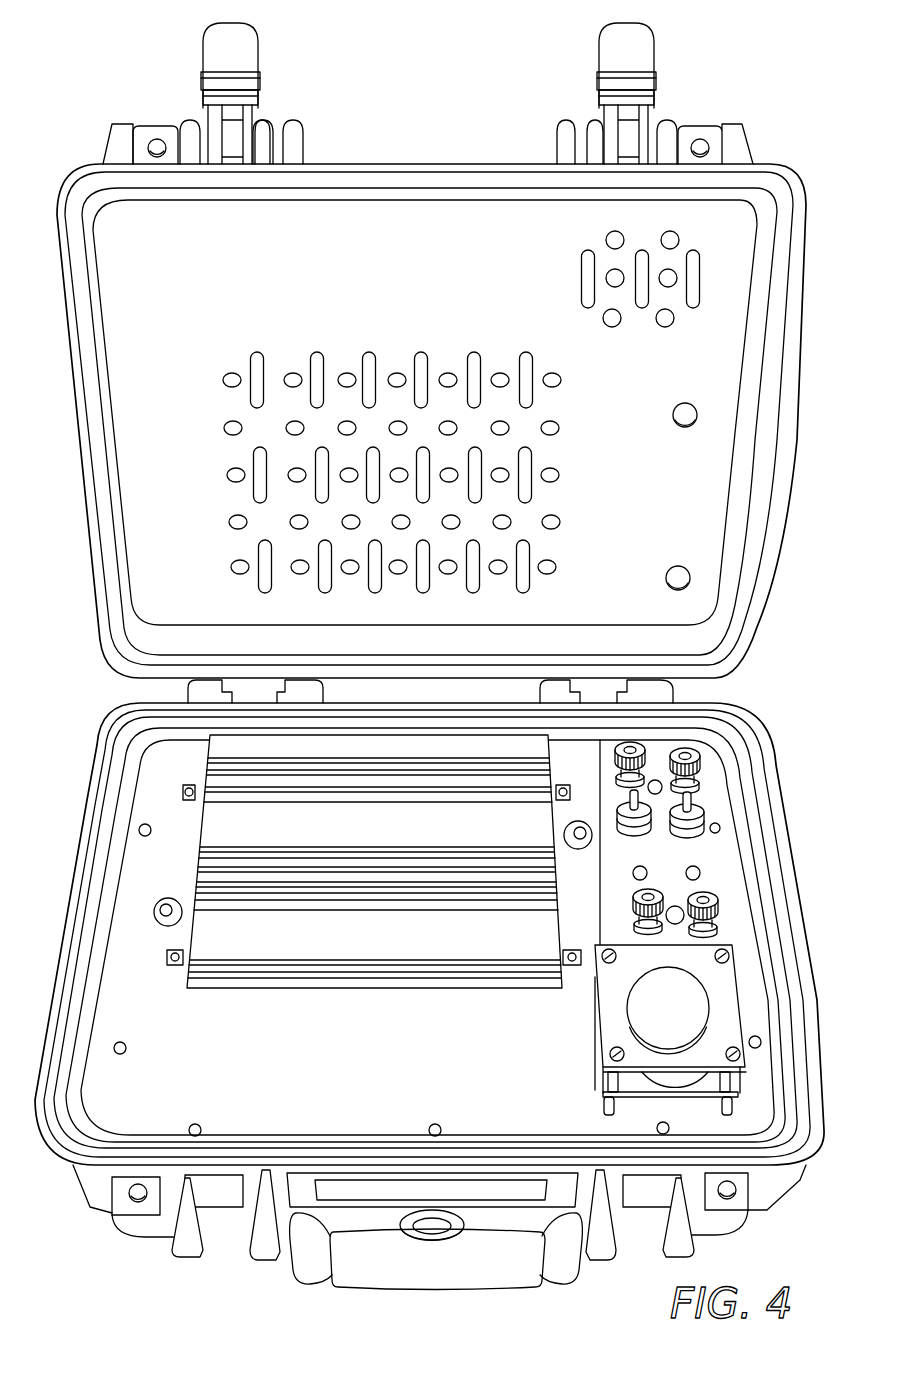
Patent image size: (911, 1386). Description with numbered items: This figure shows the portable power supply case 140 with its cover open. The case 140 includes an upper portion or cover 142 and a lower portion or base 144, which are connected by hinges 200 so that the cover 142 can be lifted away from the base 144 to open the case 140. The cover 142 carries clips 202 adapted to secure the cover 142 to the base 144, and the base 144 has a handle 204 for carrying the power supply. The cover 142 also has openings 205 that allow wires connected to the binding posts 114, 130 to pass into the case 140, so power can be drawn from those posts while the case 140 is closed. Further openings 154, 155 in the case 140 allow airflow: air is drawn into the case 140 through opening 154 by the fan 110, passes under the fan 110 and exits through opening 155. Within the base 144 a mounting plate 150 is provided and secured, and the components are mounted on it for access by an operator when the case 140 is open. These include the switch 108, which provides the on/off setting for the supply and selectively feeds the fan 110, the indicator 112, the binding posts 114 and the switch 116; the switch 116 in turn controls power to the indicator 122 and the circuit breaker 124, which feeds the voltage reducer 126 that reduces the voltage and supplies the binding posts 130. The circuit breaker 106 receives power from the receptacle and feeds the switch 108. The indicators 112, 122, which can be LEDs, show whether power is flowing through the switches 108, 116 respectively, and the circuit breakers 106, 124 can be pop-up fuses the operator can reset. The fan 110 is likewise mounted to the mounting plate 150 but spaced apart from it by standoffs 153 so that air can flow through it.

The case 140 is at (70, 116).
The cover 142 is at (785, 445).
The base 144 is at (818, 1043).
The mounting plate 150 is at (118, 1030).
The standoffs 153 is at (604, 1103).
The opening 154 is at (385, 366).
The opening 155 is at (605, 278).
The hinges 200 is at (188, 692).
The clips 202 is at (245, 42).
The handle 204 is at (428, 1284).
The openings 205 is at (663, 415).
The circuit breaker 106 is at (700, 872).
The switch 108 is at (698, 803).
The fan 110 is at (600, 1018).
The indicator 112 is at (700, 772).
The binding posts 114 is at (642, 740).
The switch 116 is at (648, 790).
The indicator 122 is at (718, 895).
The circuit breaker 124 is at (634, 877).
The voltage reducer 126 is at (333, 990).
The binding posts 130 is at (700, 934).